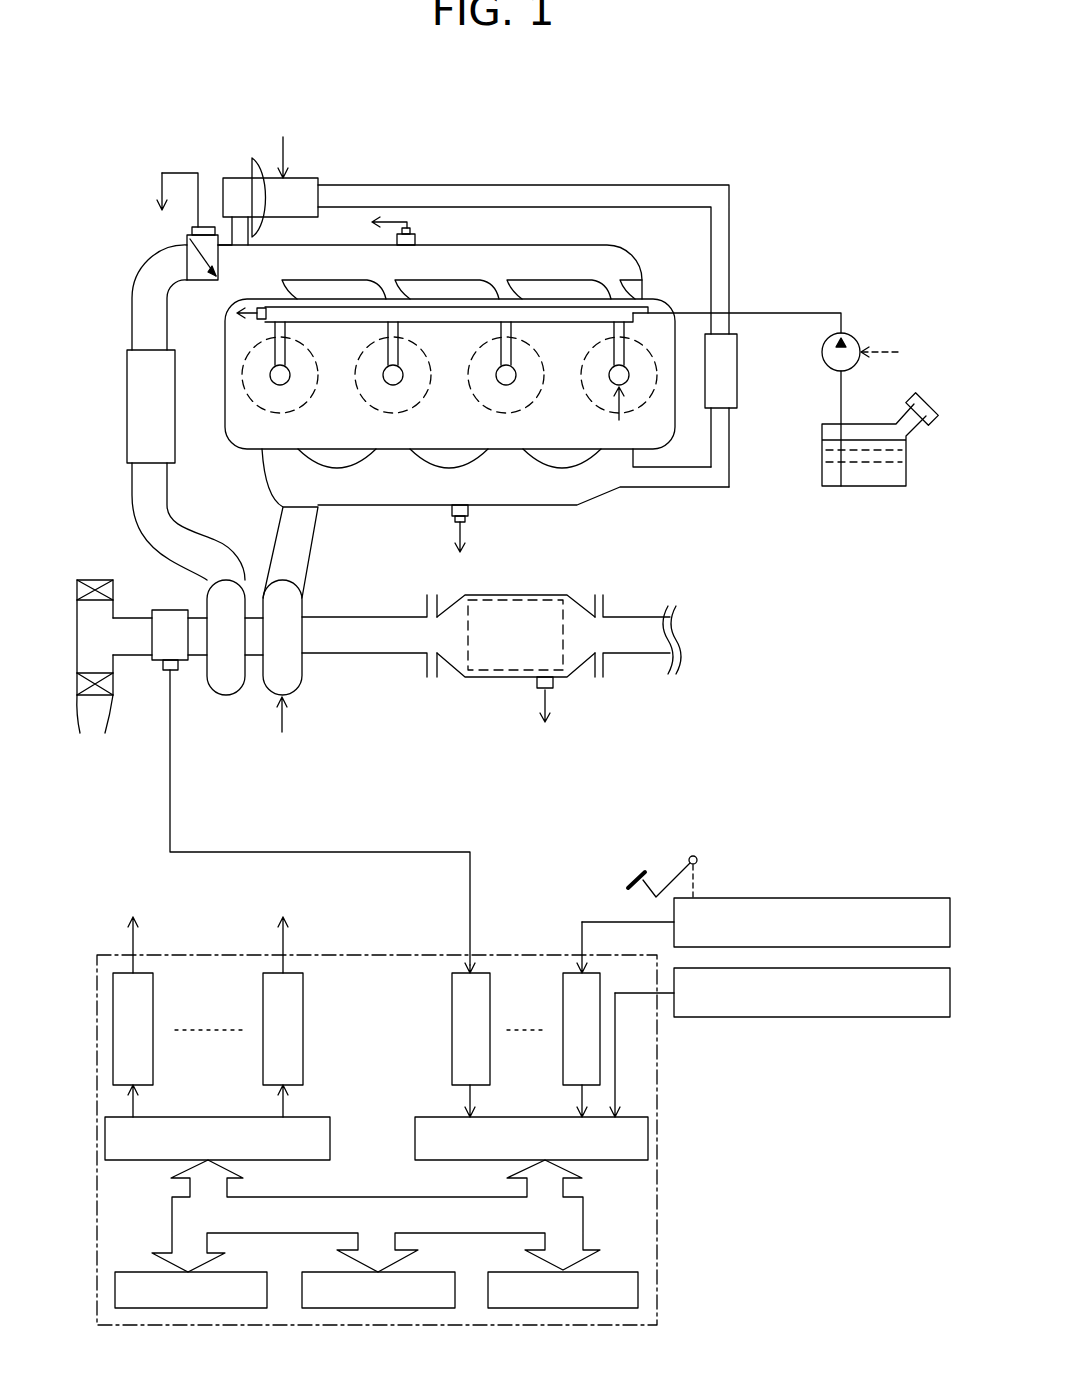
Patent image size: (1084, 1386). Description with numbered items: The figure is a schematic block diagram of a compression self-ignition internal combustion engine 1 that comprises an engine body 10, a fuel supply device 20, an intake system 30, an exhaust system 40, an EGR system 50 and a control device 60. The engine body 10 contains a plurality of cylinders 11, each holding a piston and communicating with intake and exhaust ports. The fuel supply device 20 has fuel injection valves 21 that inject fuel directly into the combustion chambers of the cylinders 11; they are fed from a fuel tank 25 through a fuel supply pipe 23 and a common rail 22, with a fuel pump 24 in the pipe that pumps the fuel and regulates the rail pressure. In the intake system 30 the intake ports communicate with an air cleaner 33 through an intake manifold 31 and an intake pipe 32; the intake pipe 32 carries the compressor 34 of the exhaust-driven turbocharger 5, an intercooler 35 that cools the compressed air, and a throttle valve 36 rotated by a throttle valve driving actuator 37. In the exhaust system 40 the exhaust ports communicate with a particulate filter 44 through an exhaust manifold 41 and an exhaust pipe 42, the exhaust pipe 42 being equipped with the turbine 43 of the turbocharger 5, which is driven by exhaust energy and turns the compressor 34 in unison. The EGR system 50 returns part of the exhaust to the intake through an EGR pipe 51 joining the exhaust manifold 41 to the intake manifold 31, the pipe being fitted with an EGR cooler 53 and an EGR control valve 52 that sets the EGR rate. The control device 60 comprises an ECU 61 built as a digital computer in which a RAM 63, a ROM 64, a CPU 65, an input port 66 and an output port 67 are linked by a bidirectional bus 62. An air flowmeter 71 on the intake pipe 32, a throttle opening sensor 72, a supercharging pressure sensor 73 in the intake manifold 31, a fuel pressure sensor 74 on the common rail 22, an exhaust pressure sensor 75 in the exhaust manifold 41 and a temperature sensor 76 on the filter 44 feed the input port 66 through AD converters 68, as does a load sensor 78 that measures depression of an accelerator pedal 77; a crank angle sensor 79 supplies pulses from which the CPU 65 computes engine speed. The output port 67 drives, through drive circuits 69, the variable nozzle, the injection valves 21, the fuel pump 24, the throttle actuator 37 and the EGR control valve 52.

The internal combustion engine 1 is at (866, 132).
The exhaust-driven turbocharger 5 is at (235, 758).
The engine body 10 is at (656, 298).
The cylinders 11 is at (645, 400).
The fuel supply device 20 is at (814, 294).
The fuel injection valves 21 is at (608, 374).
The common rail 22 is at (617, 290).
The fuel supply pipe 23 is at (760, 312).
The fuel pump 24 is at (856, 334).
The fuel tank 25 is at (862, 488).
The intake system 30 is at (86, 303).
The intake manifold 31 is at (508, 244).
The intake pipe 32 is at (125, 605).
The air cleaner 33 is at (113, 680).
The compressor 34 is at (232, 680).
The intercooler 35 is at (127, 390).
The throttle valve 36 is at (205, 255).
The throttle valve driving actuator 37 is at (186, 240).
The exhaust system 40 is at (567, 532).
The exhaust manifold 41 is at (430, 507).
The exhaust pipe 42 is at (643, 655).
The turbine 43 is at (292, 685).
The particulate filter 44 is at (480, 680).
The EGR system 50 is at (744, 212).
The EGR pipe 51 is at (456, 185).
The EGR control valve 52 is at (303, 178).
The EGR cooler 53 is at (738, 376).
The control device 60 is at (767, 1201).
The electronic control unit (ECU) 61 is at (327, 952).
The bidirectional bus 62 is at (585, 1220).
The random-access memory (RAM) 63 is at (203, 1310).
The read-only memory (ROM) 64 is at (372, 1310).
The microprocessor (CPU) 65 is at (568, 1310).
The input port 66 is at (430, 1117).
The output port 67 is at (318, 1117).
The AD converters 68 is at (563, 993).
The drive circuits 69 is at (263, 988).
The air flowmeter 71 is at (170, 608).
The throttle opening sensor 72 is at (200, 228).
The supercharging pressure sensor 73 is at (416, 232).
The fuel pressure sensor 74 is at (243, 317).
The exhaust pressure sensor 75 is at (468, 520).
The temperature sensor 76 is at (553, 682).
The accelerator pedal 77 is at (671, 878).
The load sensor 78 is at (880, 898).
The crank angle sensor 79 is at (905, 1018).